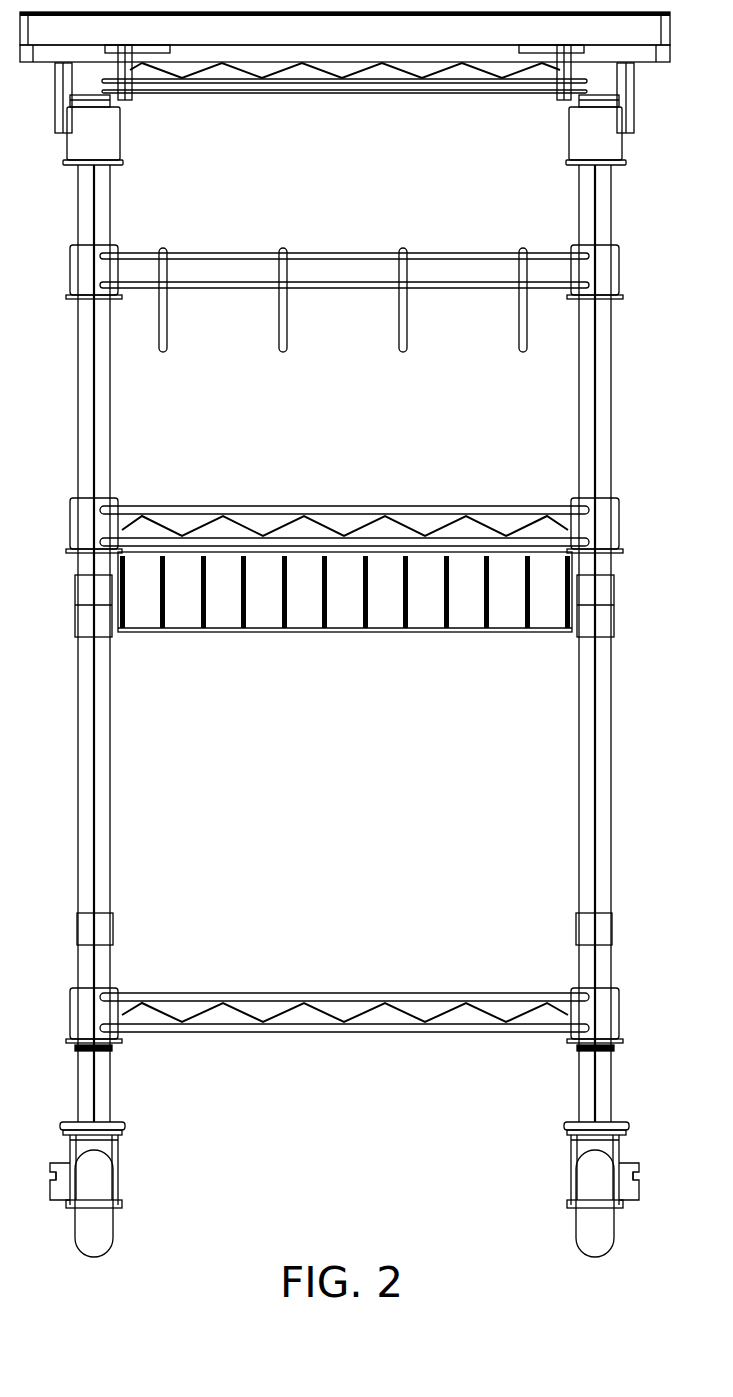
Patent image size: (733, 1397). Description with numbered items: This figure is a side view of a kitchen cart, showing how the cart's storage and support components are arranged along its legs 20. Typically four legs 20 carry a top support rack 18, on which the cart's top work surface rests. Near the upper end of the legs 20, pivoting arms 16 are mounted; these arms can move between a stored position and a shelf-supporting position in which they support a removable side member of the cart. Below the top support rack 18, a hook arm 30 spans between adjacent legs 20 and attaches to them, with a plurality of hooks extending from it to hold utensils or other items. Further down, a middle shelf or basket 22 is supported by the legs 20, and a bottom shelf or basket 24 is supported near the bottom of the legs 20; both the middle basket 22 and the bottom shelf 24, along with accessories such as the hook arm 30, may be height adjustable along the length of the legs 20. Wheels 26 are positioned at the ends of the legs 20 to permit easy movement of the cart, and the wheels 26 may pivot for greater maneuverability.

The pivoting arms 16 is at (610, 133).
The top support rack 18 is at (407, 92).
The legs 20 is at (583, 847).
The middle shelf or basket 22 is at (275, 632).
The bottom shelf or basket 24 is at (428, 1038).
The wheels 26 is at (105, 1233).
The hook arm 30 is at (347, 253).